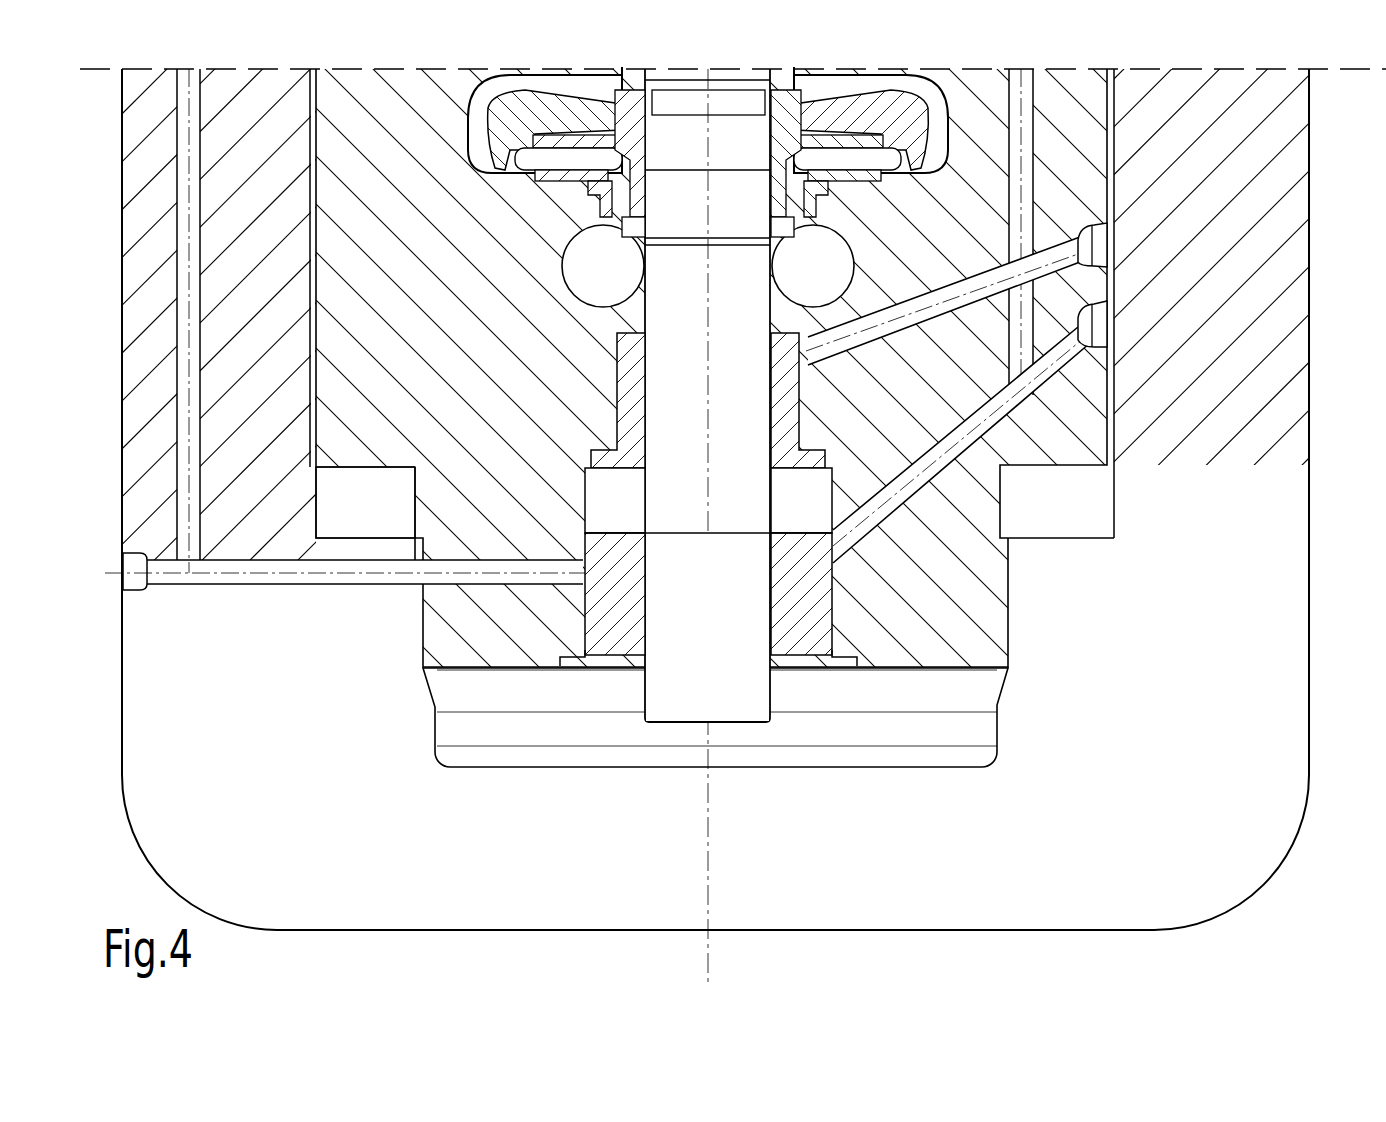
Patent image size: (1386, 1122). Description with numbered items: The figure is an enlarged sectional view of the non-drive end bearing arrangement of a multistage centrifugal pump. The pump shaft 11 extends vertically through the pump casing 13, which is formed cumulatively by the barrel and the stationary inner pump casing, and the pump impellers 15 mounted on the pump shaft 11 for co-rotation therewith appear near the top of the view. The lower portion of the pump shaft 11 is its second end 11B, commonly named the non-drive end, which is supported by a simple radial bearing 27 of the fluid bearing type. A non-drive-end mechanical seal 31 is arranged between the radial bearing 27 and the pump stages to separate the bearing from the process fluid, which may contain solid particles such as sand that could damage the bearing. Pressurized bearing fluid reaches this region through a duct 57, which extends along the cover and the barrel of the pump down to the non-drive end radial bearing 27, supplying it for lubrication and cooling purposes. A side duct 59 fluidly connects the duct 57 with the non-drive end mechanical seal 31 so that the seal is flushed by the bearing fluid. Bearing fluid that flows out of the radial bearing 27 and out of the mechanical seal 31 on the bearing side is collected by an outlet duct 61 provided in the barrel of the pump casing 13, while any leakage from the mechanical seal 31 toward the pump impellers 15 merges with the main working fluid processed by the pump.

The pump shaft 11 is at (659, 310).
The second end 11B is at (702, 573).
The pump casing 13 is at (1320, 634).
The pump impellers 15 is at (906, 128).
The radial bearing 27 is at (840, 610).
The non-drive-end mechanical seal 31 is at (808, 397).
The duct 57 is at (1027, 153).
The side duct 59 is at (927, 313).
The outlet duct 61 is at (190, 287).